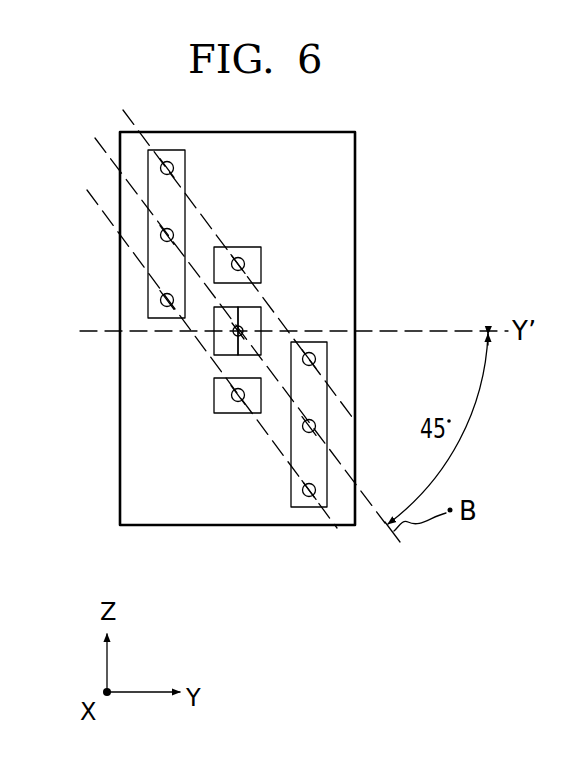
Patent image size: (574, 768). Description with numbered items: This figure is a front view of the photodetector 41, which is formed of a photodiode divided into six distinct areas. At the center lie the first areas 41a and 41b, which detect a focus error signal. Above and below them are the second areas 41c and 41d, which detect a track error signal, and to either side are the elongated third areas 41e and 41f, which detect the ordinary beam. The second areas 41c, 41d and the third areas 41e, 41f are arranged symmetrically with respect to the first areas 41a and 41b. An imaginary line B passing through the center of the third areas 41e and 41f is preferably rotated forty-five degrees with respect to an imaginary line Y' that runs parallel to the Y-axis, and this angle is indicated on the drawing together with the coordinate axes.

The photodetector 41 is at (88, 298).
The first area 41a is at (222, 340).
The first area 41b is at (250, 318).
The second area 41c is at (261, 253).
The second area 41d is at (214, 413).
The third area 41e is at (152, 163).
The third area 41f is at (303, 502).